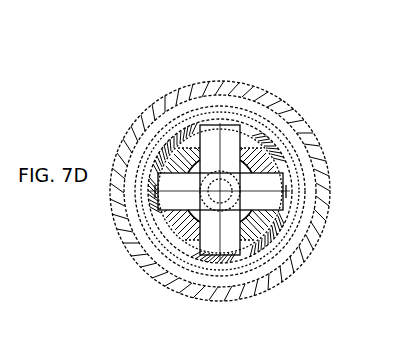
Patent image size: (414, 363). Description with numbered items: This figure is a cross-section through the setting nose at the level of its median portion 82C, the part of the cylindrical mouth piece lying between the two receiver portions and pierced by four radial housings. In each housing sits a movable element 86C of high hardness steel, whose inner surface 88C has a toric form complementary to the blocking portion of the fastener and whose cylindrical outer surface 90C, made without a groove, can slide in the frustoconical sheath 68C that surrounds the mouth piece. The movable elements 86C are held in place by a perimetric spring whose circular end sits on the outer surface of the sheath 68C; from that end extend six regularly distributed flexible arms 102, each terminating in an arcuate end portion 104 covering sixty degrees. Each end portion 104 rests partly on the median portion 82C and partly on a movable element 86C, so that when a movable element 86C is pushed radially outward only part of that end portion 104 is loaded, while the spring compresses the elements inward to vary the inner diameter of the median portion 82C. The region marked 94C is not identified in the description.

The frustoconical sheath 68C is at (152, 104).
The end portion 104 is at (153, 203).
The flexible arm 102 is at (157, 230).
The movable element 86C is at (267, 183).
The cylindrical outer surface 90C is at (225, 127).
The inner surface 88C is at (213, 172).
The central bore 94C is at (213, 225).
The median portion 82C is at (254, 222).